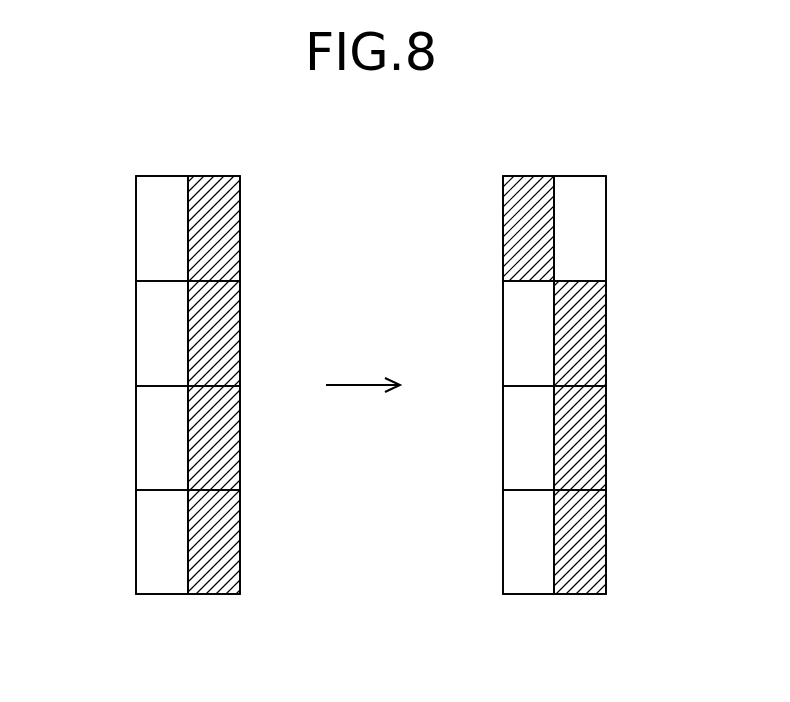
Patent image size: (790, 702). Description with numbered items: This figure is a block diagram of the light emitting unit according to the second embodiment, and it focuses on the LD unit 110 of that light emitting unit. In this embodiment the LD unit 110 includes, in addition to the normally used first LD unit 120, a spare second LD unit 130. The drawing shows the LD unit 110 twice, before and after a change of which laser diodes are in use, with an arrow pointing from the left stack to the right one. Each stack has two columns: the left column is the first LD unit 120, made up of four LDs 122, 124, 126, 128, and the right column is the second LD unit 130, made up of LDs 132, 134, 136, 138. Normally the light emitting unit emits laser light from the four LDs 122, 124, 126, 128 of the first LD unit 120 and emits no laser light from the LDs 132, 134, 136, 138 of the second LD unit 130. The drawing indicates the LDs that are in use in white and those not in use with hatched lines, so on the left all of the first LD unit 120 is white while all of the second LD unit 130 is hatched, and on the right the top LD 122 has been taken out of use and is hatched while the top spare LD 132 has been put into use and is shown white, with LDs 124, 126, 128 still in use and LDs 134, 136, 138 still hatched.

The LD unit 110 is at (200, 176).
The first LD unit 120 is at (169, 595).
The second LD unit 130 is at (219, 595).
The LD 122 is at (136, 230).
The LD 124 is at (136, 334).
The LD 126 is at (136, 440).
The LD 128 is at (136, 545).
The LD 132 is at (242, 230).
The LD 134 is at (242, 334).
The LD 136 is at (242, 439).
The LD 138 is at (242, 544).